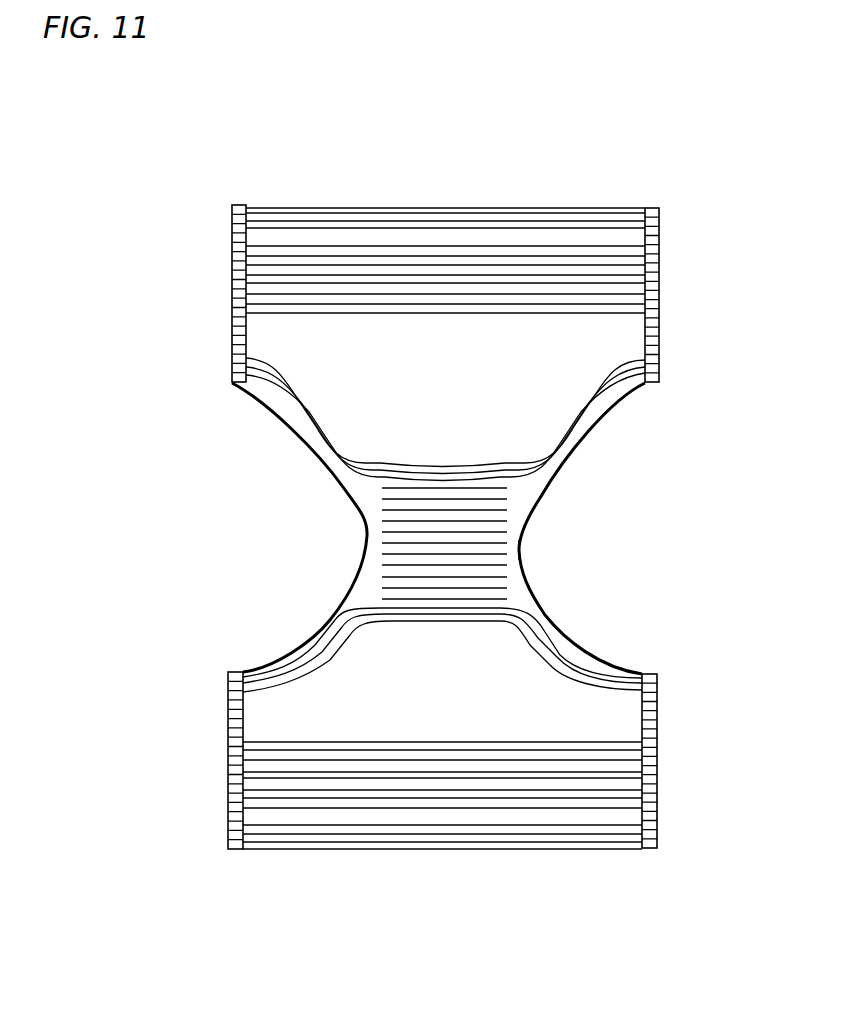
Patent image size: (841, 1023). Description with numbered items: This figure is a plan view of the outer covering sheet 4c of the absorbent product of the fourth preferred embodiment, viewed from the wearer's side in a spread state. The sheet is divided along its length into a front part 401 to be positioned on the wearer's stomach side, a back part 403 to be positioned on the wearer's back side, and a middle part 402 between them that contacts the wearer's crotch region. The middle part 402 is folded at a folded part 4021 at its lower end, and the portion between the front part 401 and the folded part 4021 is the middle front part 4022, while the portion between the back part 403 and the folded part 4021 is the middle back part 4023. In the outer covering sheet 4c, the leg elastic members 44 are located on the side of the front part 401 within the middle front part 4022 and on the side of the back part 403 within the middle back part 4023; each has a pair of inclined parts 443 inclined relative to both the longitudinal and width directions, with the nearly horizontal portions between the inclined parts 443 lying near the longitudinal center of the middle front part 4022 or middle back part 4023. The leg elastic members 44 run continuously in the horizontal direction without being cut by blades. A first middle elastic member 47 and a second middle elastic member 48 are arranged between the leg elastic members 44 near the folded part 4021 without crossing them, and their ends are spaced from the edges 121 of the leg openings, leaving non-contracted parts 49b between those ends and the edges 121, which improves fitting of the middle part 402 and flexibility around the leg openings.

The outer covering sheet 4c is at (232, 182).
The back part 403 is at (318, 325).
The front part 401 is at (315, 729).
The middle part 402 is at (272, 545).
The folded part 4021 is at (522, 549).
The middle front part 4022 is at (450, 592).
The middle back part 4023 is at (450, 495).
The second middle elastic member 48 is at (408, 506).
The first middle elastic member 47 is at (407, 590).
The non-contracted part 49b is at (367, 510).
The leg elastic member 44 is at (290, 413).
The inclined part 443 is at (302, 425).
The edge of leg opening 121 is at (613, 412).